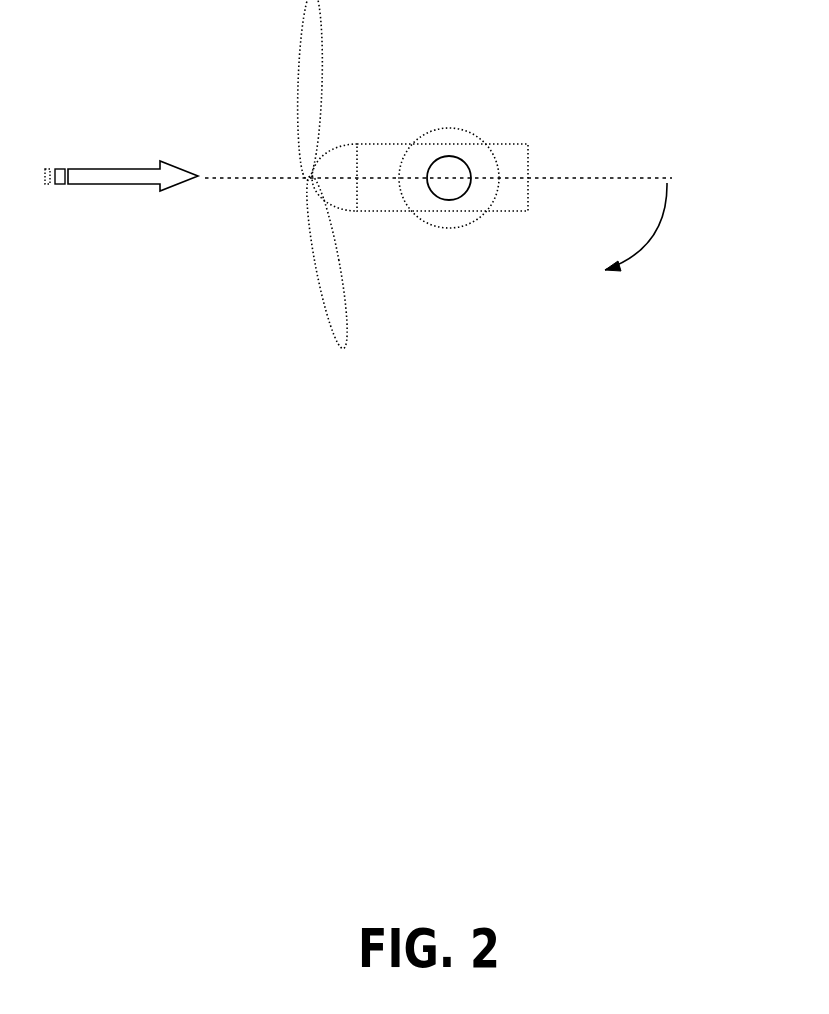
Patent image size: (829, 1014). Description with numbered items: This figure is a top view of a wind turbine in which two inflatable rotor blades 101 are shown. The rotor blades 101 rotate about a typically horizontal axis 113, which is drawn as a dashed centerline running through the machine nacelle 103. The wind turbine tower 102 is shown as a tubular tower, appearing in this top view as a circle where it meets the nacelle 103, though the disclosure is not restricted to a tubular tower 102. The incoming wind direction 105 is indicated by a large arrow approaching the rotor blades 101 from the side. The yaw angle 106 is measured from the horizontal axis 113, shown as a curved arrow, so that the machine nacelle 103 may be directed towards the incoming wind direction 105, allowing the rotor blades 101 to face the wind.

The inflatable rotor blades 101 is at (302, 75).
The wind turbine tower 102 is at (465, 225).
The machine nacelle 103 is at (377, 144).
The incoming wind direction 105 is at (163, 186).
The yaw angle 106 is at (638, 255).
The horizontal axis 113 is at (565, 179).